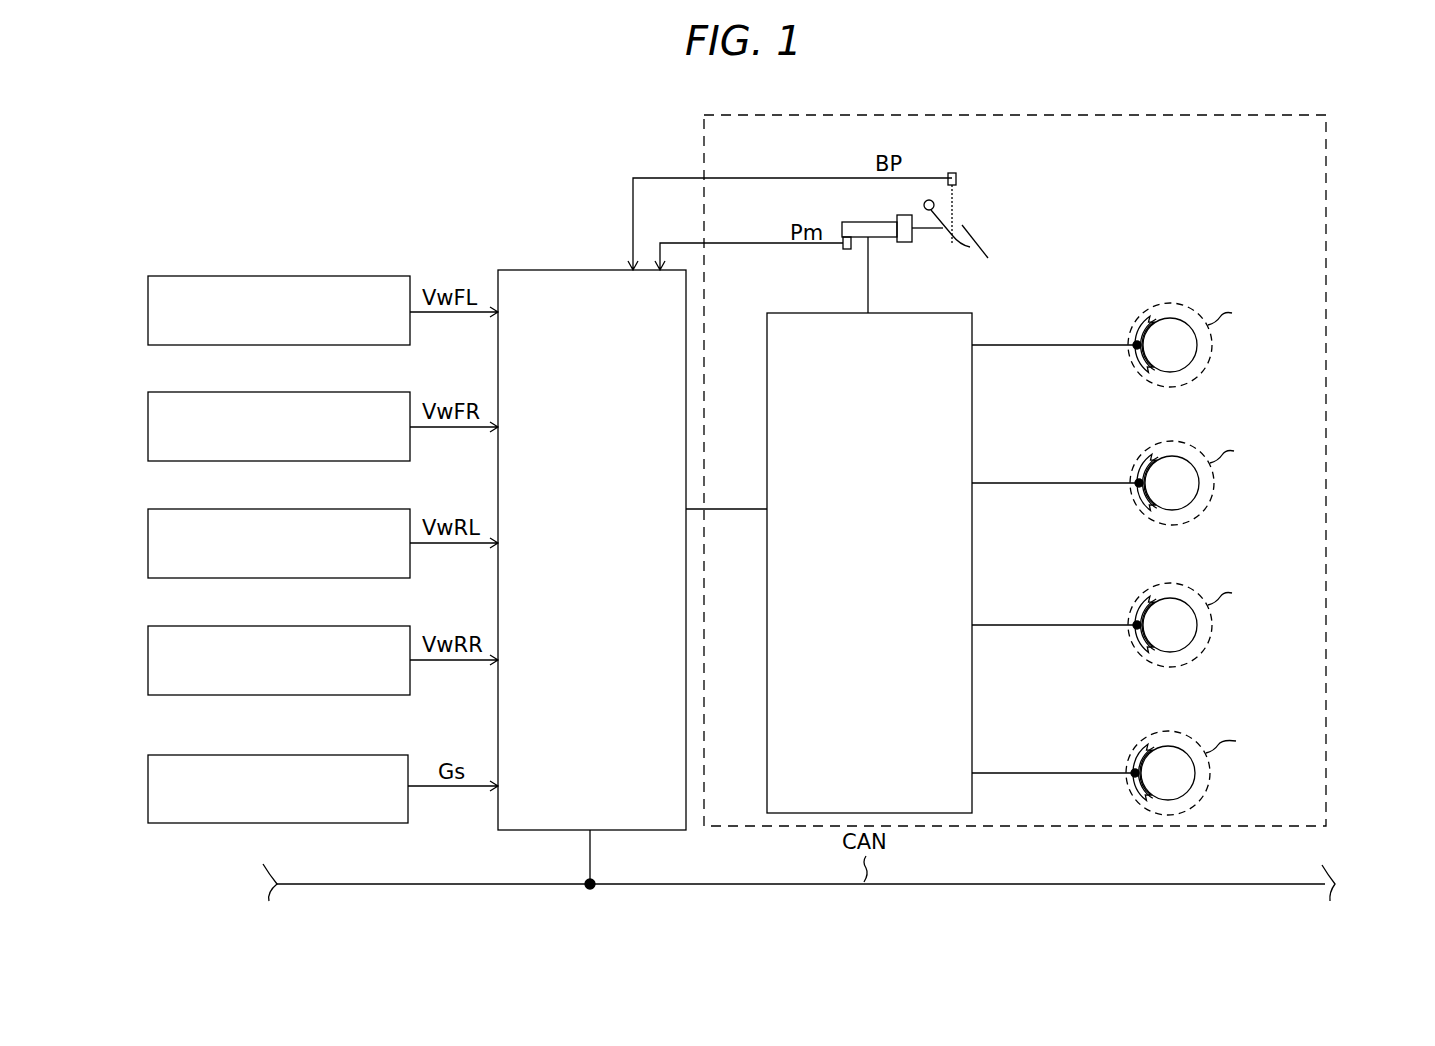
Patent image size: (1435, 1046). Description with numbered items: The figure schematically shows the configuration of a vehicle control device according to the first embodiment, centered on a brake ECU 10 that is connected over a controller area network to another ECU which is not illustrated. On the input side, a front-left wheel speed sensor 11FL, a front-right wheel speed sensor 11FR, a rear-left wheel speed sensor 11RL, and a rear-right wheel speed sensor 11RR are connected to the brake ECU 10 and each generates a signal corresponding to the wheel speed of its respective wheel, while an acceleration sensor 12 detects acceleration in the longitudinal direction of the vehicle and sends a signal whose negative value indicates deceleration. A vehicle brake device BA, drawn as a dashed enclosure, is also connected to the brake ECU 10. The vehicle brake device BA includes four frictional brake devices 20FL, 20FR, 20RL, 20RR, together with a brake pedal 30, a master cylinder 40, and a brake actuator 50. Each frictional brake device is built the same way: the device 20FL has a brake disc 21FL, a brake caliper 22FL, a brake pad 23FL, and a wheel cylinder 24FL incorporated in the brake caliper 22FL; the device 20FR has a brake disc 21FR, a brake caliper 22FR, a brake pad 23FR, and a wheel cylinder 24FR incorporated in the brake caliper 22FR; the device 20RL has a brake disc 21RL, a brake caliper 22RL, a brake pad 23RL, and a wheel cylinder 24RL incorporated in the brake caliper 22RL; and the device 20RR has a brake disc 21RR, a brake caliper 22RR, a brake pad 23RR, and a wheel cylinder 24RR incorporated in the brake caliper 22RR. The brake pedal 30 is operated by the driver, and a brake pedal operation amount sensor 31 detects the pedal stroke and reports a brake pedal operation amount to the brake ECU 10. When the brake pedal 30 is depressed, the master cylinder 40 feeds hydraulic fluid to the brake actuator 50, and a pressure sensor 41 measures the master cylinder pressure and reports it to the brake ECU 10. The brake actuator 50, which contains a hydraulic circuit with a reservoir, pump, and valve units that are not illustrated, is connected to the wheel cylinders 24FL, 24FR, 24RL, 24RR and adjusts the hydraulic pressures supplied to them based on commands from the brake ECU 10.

The brake ECU 10 is at (565, 268).
The front-left wheel speed sensor 11FL is at (282, 276).
The front-right wheel speed sensor 11FR is at (282, 392).
The rear-left wheel speed sensor 11RL is at (282, 509).
The rear-right wheel speed sensor 11RR is at (282, 626).
The acceleration sensor 12 is at (282, 755).
The frictional brake device 20FL is at (1160, 320).
The frictional brake device 20FR is at (1163, 462).
The frictional brake device 20RL is at (1161, 603).
The frictional brake device 20RR is at (1163, 752).
The brake disc 21FL is at (1204, 345).
The brake disc 21FR is at (1207, 483).
The brake disc 21RL is at (1205, 625).
The brake disc 21RR is at (1207, 773).
The brake caliper 22FL is at (1117, 326).
The brake caliper 22FR is at (1119, 466).
The brake caliper 22RL is at (1117, 608).
The brake caliper 22RR is at (1114, 757).
The brake pad 23FL is at (1103, 344).
The brake pad 23FR is at (1105, 482).
The brake pad 23RL is at (1103, 624).
The brake pad 23RR is at (1100, 772).
The wheel cylinder 24FL is at (1090, 359).
The wheel cylinder 24FR is at (1092, 498).
The wheel cylinder 24RL is at (1090, 640).
The wheel cylinder 24RR is at (1087, 788).
The brake pedal 30 is at (975, 235).
The brake pedal operation amount sensor 31 is at (957, 170).
The master cylinder 40 is at (888, 237).
The pressure sensor 41 is at (846, 250).
The brake actuator 50 is at (898, 313).
The vehicle brake device BA is at (1326, 232).